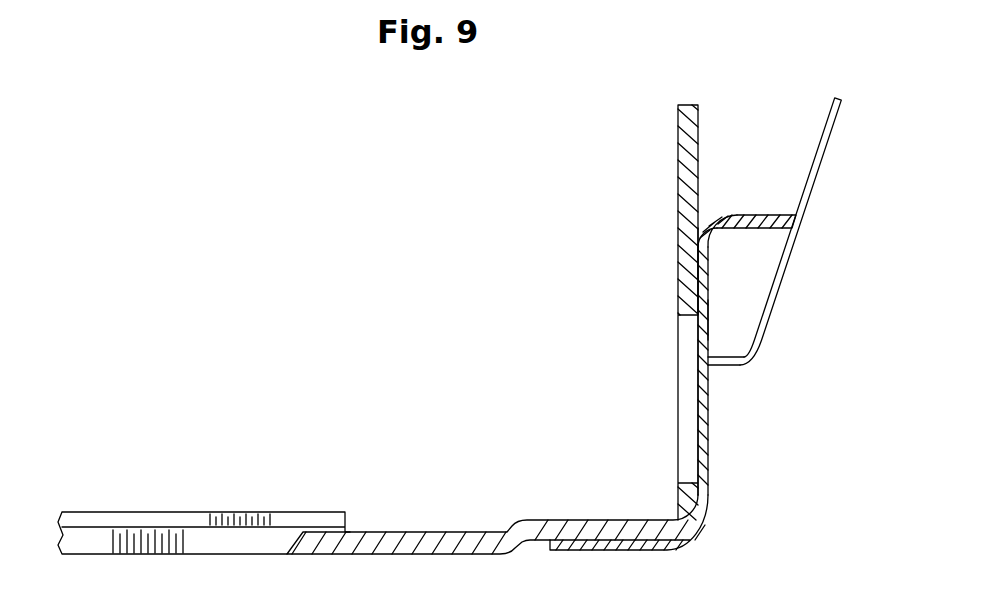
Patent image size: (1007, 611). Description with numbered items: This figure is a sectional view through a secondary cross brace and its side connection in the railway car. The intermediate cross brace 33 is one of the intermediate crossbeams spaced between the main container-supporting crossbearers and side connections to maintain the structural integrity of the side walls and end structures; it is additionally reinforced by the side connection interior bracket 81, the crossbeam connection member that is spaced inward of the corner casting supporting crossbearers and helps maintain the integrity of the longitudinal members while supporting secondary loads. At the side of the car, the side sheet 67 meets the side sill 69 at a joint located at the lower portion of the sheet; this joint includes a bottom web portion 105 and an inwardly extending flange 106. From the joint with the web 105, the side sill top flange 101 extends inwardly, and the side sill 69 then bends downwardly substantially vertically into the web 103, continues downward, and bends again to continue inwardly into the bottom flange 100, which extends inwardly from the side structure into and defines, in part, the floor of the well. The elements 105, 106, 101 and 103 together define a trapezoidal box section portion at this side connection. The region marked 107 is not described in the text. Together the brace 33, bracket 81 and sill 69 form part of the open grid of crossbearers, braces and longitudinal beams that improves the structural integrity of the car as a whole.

The intermediate cross brace 33 is at (305, 523).
The side sheet 67 is at (800, 222).
The side sill 69 is at (708, 425).
The side connection interior bracket 81 is at (687, 442).
The bottom flange 100 is at (668, 551).
The side sill top flange 101 is at (753, 215).
The web 103 is at (708, 318).
The bottom web portion 105 is at (794, 263).
The inwardly extending flange 106 is at (736, 366).
The panel edge 107 is at (690, 278).